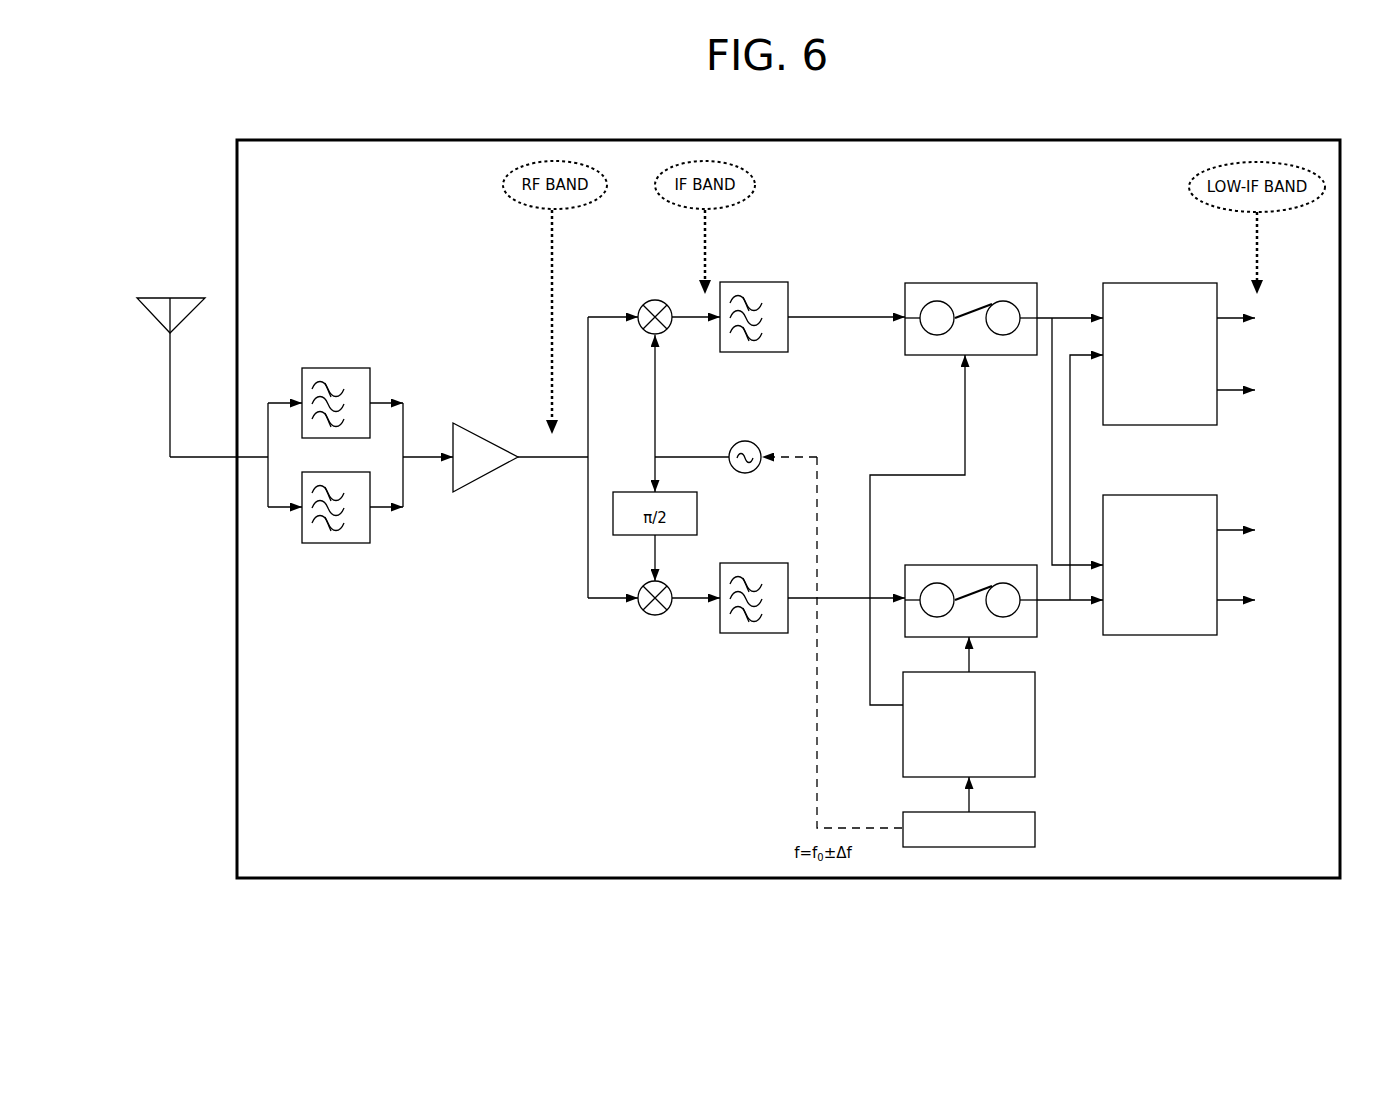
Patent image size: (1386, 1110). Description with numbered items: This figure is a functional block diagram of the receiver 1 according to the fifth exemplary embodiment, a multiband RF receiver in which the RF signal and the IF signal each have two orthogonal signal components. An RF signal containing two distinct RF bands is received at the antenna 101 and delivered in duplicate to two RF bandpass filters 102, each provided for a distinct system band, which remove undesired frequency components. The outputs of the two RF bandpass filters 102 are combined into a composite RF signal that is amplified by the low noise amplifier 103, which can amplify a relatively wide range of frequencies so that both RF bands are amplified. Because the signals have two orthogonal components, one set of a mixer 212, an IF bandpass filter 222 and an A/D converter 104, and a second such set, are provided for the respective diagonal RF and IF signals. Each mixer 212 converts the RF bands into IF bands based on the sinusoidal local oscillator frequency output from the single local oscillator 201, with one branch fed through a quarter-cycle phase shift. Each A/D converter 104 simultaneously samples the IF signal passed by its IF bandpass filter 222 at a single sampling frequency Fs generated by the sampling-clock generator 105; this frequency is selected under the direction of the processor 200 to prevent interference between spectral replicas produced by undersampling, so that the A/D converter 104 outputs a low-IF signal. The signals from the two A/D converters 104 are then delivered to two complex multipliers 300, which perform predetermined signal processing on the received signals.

The receiver 1 is at (1137, 140).
The antenna 101 is at (153, 298).
The RF bandpass filter 102 is at (321, 368).
The low noise amplifier 103 is at (490, 440).
The A/D converter 104 is at (1020, 282).
The sampling-clock generator 105 is at (1038, 712).
The processor 200 is at (908, 812).
The local oscillator 201 is at (747, 440).
The mixer 212 is at (690, 263).
The IF bandpass filter 222 is at (788, 295).
The complex multiplier 300 is at (1153, 283).